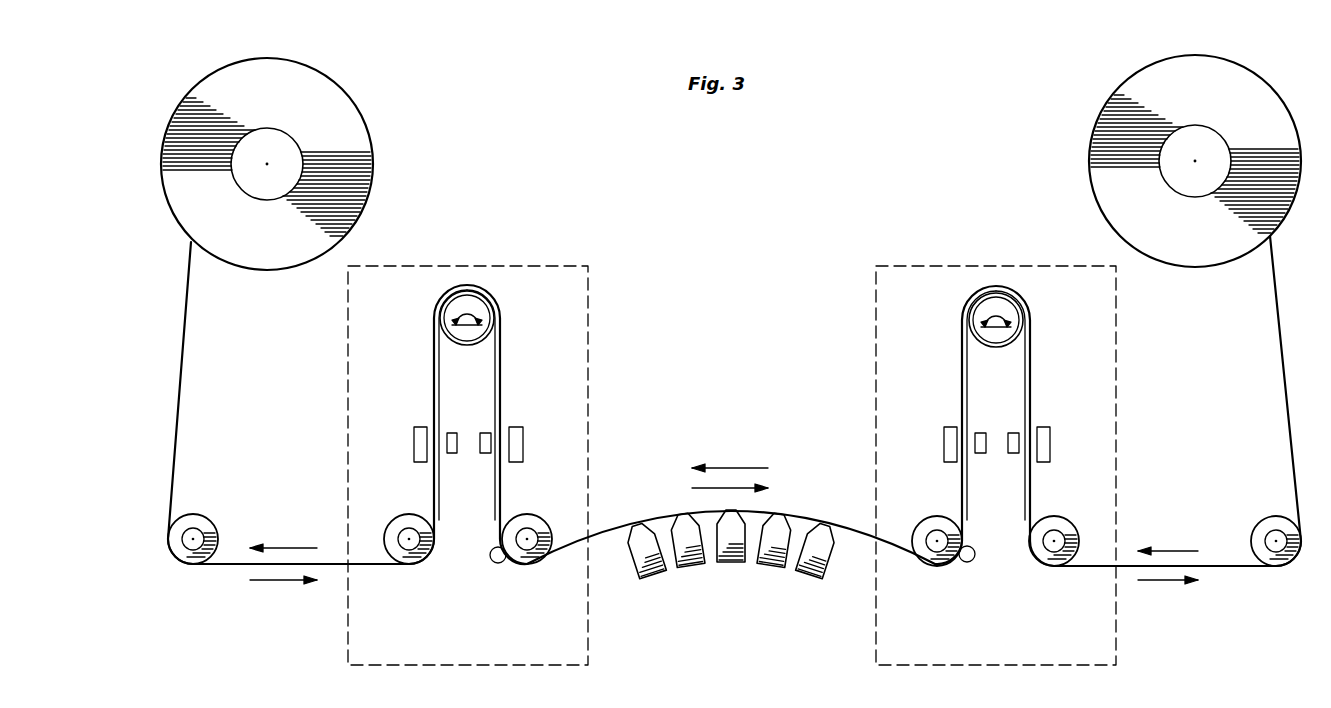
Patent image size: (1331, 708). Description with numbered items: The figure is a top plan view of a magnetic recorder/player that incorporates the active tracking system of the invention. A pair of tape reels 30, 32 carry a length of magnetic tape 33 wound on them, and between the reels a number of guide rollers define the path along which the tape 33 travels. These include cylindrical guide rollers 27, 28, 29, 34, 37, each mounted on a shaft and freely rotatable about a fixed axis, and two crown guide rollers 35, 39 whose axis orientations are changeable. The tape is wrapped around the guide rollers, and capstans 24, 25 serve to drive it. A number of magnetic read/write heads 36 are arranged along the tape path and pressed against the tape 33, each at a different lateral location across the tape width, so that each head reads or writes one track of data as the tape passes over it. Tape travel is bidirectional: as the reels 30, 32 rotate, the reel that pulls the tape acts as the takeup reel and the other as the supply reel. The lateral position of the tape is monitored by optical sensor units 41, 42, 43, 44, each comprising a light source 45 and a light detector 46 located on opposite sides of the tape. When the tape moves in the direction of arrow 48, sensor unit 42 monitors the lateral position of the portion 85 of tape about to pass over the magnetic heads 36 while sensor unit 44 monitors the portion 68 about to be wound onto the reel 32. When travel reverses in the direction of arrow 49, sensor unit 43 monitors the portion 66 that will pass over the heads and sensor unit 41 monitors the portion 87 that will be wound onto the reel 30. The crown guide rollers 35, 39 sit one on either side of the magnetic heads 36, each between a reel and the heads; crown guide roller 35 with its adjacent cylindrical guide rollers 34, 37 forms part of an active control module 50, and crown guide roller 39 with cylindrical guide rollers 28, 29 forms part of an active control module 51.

The capstan 24 is at (493, 563).
The capstan 25 is at (971, 562).
The cylindrical guide roller 27 is at (186, 566).
The cylindrical guide roller 28 is at (403, 566).
The cylindrical guide roller 29 is at (523, 564).
The tape reel 30 is at (355, 122).
The tape reel 32 is at (1106, 124).
The magnetic tape 33 is at (1283, 326).
The cylindrical guide roller 34 is at (1052, 566).
The crown guide roller 35 is at (1010, 306).
The magnetic read/write head 36 is at (651, 575).
The cylindrical guide roller 37 is at (935, 566).
The crown guide roller 39 is at (480, 304).
The optical sensor unit 41 is at (428, 418).
The optical sensor unit 42 is at (507, 418).
The optical sensor unit 43 is at (956, 418).
The optical sensor unit 44 is at (1035, 418).
The light source 45 is at (452, 455).
The light detector 46 is at (418, 452).
The arrow 48 is at (266, 580).
The arrow 49 is at (302, 548).
The active control module 50 is at (876, 318).
The active control module 51 is at (588, 325).
The tape portion 66 is at (962, 378).
The tape portion 68 is at (1031, 380).
The tape portion 85 is at (501, 380).
The tape portion 87 is at (433, 378).